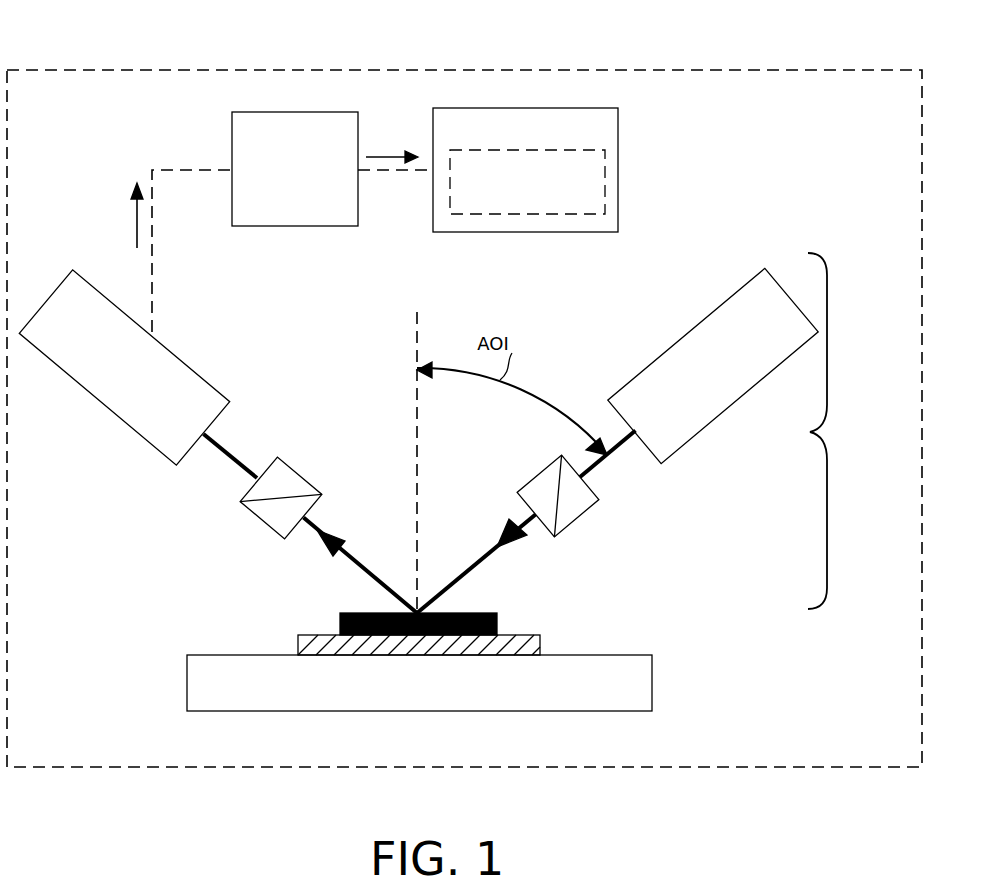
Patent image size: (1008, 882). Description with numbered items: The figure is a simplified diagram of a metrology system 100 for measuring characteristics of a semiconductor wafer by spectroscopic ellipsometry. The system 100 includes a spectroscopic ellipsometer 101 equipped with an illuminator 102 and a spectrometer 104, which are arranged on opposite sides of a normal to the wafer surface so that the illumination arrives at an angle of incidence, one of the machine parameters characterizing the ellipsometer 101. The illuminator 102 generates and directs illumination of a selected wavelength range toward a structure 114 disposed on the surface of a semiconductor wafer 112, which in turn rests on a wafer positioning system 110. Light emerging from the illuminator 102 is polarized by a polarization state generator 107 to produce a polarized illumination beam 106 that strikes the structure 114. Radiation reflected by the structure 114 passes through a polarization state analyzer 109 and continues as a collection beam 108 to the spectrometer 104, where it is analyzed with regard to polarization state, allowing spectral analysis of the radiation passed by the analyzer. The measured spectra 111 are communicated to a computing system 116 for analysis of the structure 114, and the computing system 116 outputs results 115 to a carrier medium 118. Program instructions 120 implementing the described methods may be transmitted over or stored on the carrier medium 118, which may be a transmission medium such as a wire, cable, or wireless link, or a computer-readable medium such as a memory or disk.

The metrology system 100 is at (46, 70).
The spectroscopic ellipsometer 101 is at (812, 432).
The illuminator 102 is at (678, 336).
The spectrometer 104 is at (197, 373).
The polarized illumination beam 106 is at (610, 458).
The polarization state generator 107 is at (540, 476).
The collection beam 108 is at (345, 553).
The polarization state analyzer 109 is at (260, 522).
The wafer positioning system 110 is at (652, 685).
The measured spectra 111 is at (137, 218).
The semiconductor wafer 112 is at (540, 645).
The structure 114 is at (497, 620).
The estimated parameter values 115 is at (388, 152).
The computing system 116 is at (232, 128).
The carrier medium 118 is at (618, 121).
The program instructions 120 is at (605, 165).